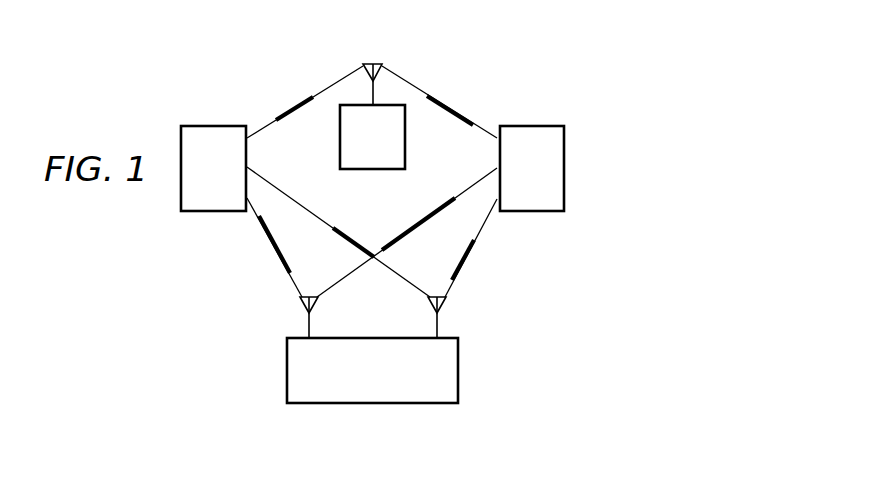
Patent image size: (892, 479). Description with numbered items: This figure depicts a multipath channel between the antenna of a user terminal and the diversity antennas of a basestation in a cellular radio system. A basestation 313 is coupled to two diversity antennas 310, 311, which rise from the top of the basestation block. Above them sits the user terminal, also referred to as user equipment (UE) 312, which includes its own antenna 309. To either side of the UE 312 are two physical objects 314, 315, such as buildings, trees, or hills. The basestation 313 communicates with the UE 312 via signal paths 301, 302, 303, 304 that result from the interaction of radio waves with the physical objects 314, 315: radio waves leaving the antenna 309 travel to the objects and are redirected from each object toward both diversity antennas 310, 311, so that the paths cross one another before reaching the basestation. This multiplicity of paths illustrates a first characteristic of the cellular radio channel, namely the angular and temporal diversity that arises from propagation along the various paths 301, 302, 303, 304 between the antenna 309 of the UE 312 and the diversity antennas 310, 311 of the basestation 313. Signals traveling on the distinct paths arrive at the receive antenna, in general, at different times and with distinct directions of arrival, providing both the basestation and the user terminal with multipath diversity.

The signal path 301 is at (272, 245).
The signal path 302 is at (285, 188).
The signal path 303 is at (461, 188).
The signal path 304 is at (474, 237).
The antenna 309 is at (373, 62).
The diversity antenna 310 is at (300, 302).
The diversity antenna 311 is at (446, 302).
The user equipment 312 is at (367, 170).
The basestation 313 is at (458, 375).
The physical object 314 is at (213, 126).
The physical object 315 is at (531, 126).